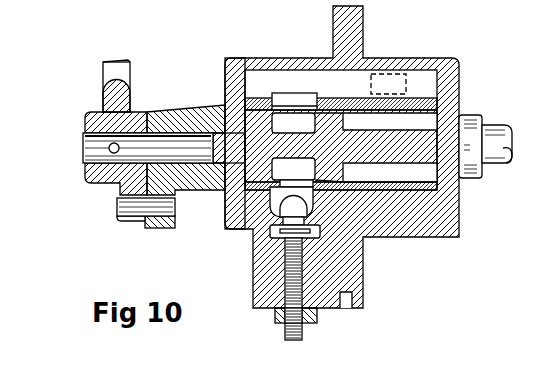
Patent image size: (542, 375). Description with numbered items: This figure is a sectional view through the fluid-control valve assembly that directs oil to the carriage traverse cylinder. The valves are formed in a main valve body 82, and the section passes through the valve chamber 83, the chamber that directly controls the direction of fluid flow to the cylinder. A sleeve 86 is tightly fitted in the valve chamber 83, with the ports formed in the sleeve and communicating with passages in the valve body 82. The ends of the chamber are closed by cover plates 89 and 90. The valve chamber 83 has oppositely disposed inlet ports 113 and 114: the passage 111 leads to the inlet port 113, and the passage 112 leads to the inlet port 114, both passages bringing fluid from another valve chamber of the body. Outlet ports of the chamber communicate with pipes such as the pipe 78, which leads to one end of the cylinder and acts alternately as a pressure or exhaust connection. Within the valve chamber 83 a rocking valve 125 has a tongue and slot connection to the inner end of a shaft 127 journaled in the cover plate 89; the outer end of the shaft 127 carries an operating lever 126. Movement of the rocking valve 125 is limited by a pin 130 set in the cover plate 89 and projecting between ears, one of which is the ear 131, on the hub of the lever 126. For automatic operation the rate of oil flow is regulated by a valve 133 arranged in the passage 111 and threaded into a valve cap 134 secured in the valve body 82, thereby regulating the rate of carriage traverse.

The pipe 78 is at (493, 143).
The valve body 82 is at (363, 292).
The valve chamber 83 is at (424, 118).
The sleeve 86 is at (439, 100).
The cover plate 89 is at (228, 78).
The cover plate 90 is at (451, 56).
The passage 111 is at (313, 193).
The passage 112 is at (388, 85).
The inlet port 113 is at (290, 213).
The inlet port 114 is at (289, 105).
The rocking valve 125 is at (407, 148).
The operating lever 126 is at (112, 79).
The shaft 127 is at (92, 149).
The pin 130 is at (117, 208).
The ear 131 is at (135, 219).
The valve 133 is at (302, 335).
The valve cap 134 is at (318, 305).